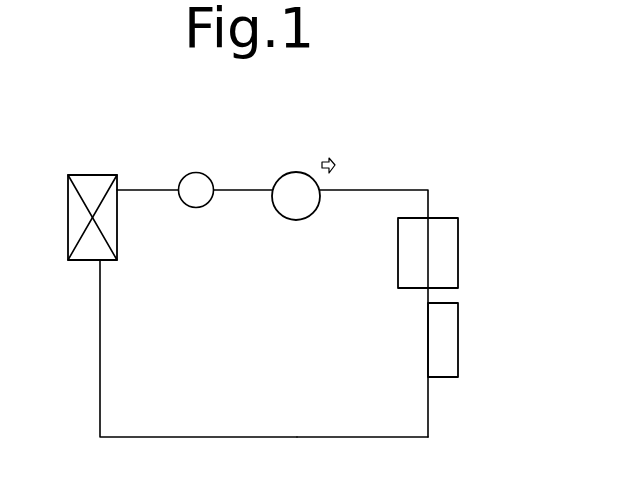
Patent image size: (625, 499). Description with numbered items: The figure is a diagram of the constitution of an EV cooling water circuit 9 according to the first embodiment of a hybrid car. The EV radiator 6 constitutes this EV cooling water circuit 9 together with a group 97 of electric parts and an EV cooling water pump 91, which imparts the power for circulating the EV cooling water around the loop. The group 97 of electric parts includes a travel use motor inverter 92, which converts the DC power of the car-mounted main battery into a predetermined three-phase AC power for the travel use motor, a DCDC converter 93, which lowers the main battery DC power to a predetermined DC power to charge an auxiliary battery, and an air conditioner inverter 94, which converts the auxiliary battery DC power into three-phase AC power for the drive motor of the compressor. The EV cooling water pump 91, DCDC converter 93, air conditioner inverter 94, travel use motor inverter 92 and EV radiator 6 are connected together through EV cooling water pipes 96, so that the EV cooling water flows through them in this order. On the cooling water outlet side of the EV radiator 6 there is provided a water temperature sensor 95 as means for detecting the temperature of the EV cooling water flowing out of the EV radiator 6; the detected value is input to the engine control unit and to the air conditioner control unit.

The EV radiator 6 is at (78, 167).
The EV cooling water circuit 9 is at (399, 146).
The EV cooling water pump 91 is at (282, 176).
The travel use motor inverter 92 is at (445, 347).
The DCDC converter 93 is at (448, 263).
The air conditioner inverter 94 is at (408, 265).
The water temperature sensor 95 is at (192, 181).
The EV cooling water pipes 96 is at (297, 438).
The group of electric parts 97 is at (430, 231).